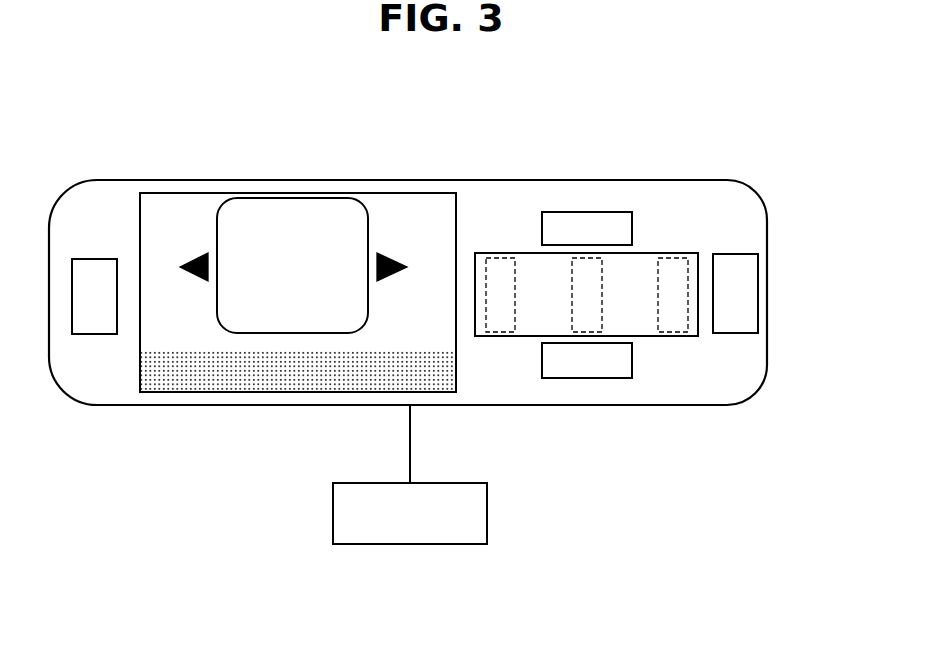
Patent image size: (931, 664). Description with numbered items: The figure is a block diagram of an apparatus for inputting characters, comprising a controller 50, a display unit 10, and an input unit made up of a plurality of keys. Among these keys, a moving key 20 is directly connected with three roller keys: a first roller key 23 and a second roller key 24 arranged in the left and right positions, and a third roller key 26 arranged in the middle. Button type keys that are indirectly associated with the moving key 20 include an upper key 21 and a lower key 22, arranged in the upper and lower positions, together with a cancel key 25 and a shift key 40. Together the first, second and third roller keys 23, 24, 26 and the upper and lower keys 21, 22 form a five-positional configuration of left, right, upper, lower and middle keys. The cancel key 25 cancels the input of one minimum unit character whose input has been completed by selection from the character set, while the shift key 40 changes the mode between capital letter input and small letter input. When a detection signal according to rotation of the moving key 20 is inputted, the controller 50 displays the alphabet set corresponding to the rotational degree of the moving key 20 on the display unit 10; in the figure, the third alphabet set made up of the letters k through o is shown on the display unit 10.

The display unit 10 is at (412, 208).
The moving key 20 is at (665, 257).
The upper key 21 is at (562, 220).
The lower key 22 is at (588, 368).
The first roller key 23 is at (497, 333).
The second roller key 24 is at (680, 333).
The cancel key 25 is at (748, 294).
The third roller key 26 is at (595, 263).
The shift key 40 is at (93, 324).
The controller 50 is at (487, 513).